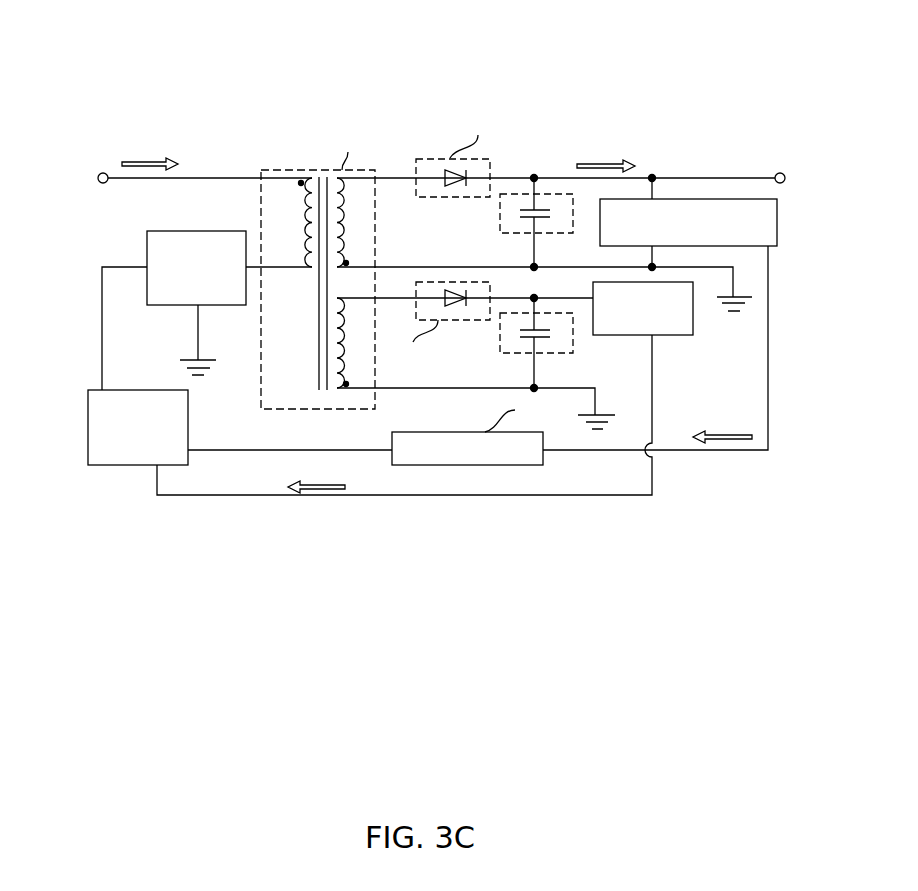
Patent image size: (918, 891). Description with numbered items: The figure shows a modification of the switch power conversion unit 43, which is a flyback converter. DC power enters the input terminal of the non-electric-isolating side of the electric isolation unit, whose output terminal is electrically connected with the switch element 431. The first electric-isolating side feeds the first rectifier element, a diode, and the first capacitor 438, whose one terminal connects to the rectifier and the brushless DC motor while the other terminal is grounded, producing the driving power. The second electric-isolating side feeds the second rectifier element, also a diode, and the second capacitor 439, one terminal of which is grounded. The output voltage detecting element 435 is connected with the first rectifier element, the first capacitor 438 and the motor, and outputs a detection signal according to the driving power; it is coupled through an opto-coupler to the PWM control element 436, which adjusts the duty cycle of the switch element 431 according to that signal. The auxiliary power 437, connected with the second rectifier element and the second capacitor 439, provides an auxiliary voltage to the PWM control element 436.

The switch power conversion unit 43 is at (96, 106).
The switch element 431 is at (158, 305).
The output voltage detecting element 435 is at (777, 217).
The PWM control element 436 is at (113, 465).
The auxiliary power 437 is at (632, 338).
The first capacitor 438 is at (502, 212).
The second capacitor 439 is at (502, 332).